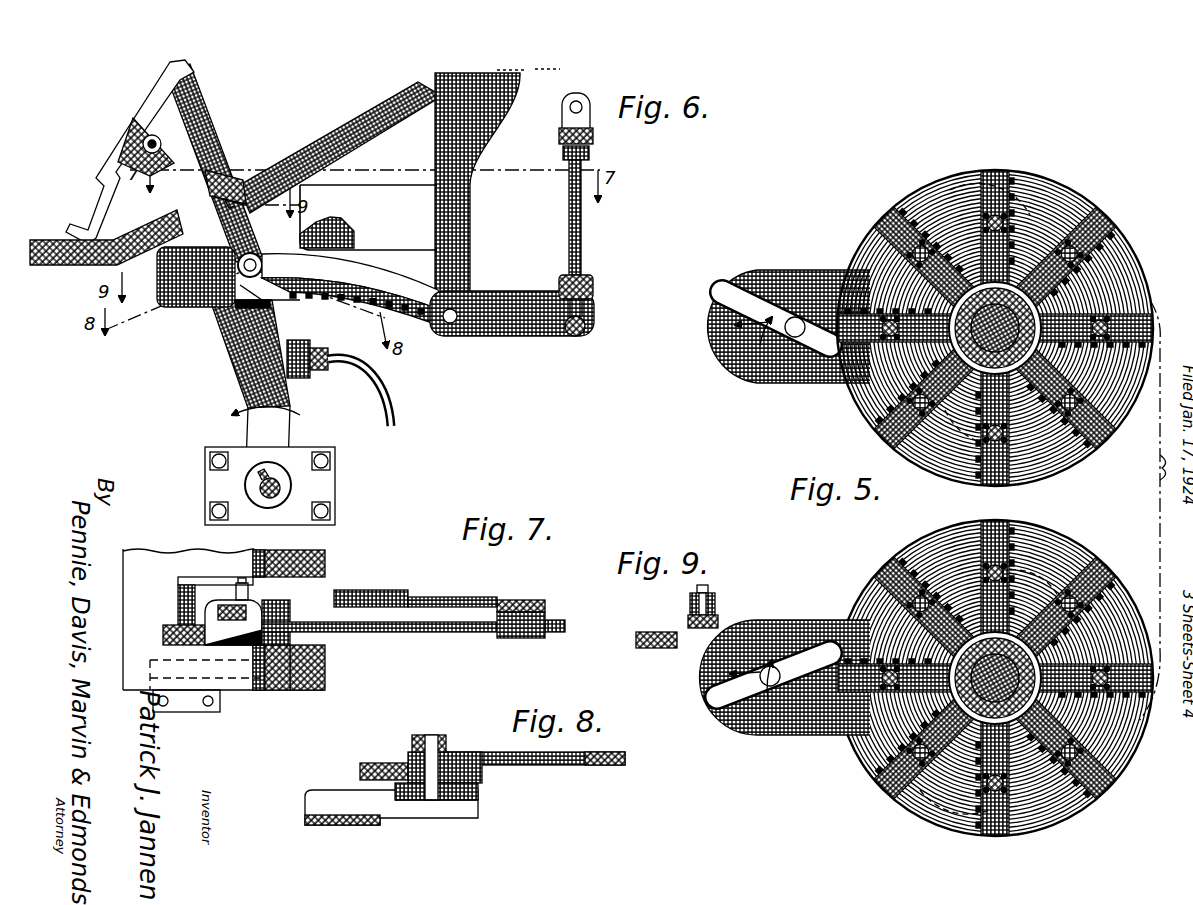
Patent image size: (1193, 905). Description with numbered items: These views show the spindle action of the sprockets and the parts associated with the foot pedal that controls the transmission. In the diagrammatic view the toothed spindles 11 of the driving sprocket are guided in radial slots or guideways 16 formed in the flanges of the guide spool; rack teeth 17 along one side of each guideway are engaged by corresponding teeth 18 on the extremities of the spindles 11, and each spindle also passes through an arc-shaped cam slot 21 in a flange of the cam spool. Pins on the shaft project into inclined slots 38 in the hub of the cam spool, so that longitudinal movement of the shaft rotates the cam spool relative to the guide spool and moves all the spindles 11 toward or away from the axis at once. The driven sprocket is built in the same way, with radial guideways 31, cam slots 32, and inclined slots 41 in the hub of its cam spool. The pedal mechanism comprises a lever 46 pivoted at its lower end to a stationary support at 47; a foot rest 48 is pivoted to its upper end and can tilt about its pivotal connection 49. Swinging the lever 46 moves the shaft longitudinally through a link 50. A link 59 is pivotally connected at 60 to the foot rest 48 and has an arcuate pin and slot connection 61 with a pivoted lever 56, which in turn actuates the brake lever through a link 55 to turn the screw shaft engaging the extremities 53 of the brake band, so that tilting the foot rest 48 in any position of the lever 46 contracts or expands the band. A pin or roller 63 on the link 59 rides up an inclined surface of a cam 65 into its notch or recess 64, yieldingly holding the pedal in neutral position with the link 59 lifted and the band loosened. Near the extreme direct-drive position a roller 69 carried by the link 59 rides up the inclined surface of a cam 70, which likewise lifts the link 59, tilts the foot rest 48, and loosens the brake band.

In FIG. 5, the toothed spindles 11 is at (1112, 312).
In FIG. 5, the radial slots or guideways 16 is at (1100, 222).
In FIG. 5, the rack teeth 17 is at (1088, 212).
In FIG. 5, the teeth 18 is at (1108, 446).
In FIG. 5, the arc-shaped cam slots 21 is at (993, 176).
In FIG. 5, the radial guideways 31 is at (1100, 582).
In FIG. 5, the cam slots 32 is at (1045, 548).
In FIG. 5, the inclined slots 38 is at (757, 296).
In FIG. 5, the inclined slots 41 is at (768, 700).
In FIG. 6, the lever 46 is at (240, 378).
In FIG. 7, the lever 46 is at (166, 636).
In FIG. 8, the lever 46 is at (362, 772).
In FIG. 9, the lever 46 is at (668, 650).
In FIG. 6, the pivot 47 is at (275, 478).
In FIG. 6, the foot rest 48 is at (158, 82).
In FIG. 6, the pivotal connection 49 is at (143, 146).
In FIG. 6, the link 50 is at (380, 416).
In FIG. 6, the extremities of the brake band 53 is at (470, 228).
In FIG. 7, the extremities of the brake band 53 is at (532, 610).
In FIG. 6, the link 55 is at (584, 258).
In FIG. 6, the pivoted lever 56 is at (506, 302).
In FIG. 7, the pivoted lever 56 is at (484, 634).
In FIG. 8, the pivoted lever 56 is at (605, 766).
In FIG. 6, the link 59 is at (216, 168).
In FIG. 7, the link 59 is at (266, 618).
In FIG. 9, the link 59 is at (690, 620).
In FIG. 6, the pivotal connection 60 is at (192, 76).
In FIG. 6, the pin and slot connection 61 is at (288, 276).
In FIG. 8, the pin and slot connection 61 is at (442, 752).
In FIG. 6, the pin or roller 63 is at (253, 255).
In FIG. 7, the pin or roller 63 is at (236, 594).
In FIG. 9, the pin or roller 63 is at (716, 610).
In FIG. 6, the notch or recess 64 is at (336, 214).
In FIG. 7, the notch or recess 64 is at (374, 598).
In FIG. 6, the cam 65 is at (352, 238).
In FIG. 7, the cam 65 is at (412, 598).
In FIG. 6, the roller 69 is at (262, 260).
In FIG. 7, the roller 69 is at (272, 692).
In FIG. 8, the roller 69 is at (414, 802).
In FIG. 6, the cam 70 is at (232, 306).
In FIG. 7, the cam 70 is at (298, 692).
In FIG. 8, the cam 70 is at (480, 792).